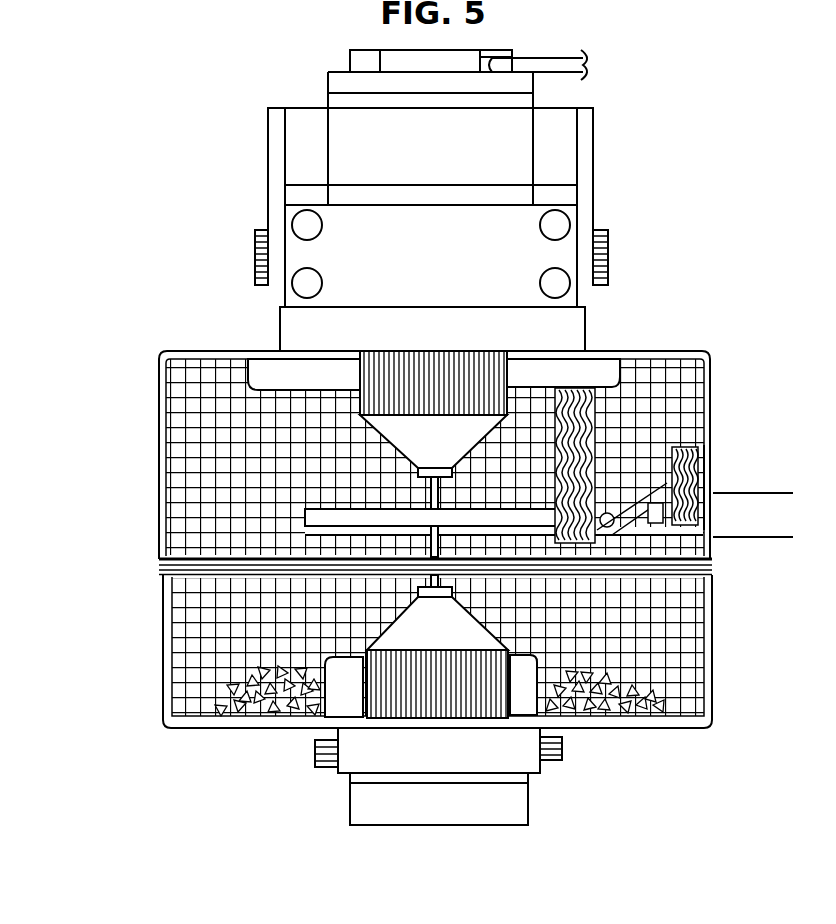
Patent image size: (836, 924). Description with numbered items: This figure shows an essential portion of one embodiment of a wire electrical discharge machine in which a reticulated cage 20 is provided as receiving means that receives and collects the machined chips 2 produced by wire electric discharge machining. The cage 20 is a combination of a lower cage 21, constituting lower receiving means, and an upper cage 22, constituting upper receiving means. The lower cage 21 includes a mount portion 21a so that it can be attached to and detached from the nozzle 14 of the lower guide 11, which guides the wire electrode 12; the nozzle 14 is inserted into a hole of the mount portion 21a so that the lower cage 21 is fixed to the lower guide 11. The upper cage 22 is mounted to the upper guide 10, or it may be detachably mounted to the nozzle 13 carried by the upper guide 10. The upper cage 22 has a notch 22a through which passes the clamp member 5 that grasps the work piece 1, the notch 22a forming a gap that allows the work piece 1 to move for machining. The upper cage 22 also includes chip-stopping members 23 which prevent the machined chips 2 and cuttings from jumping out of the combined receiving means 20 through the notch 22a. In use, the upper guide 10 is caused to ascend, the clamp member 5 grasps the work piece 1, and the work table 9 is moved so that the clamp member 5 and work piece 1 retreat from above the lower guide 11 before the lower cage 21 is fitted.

The work piece 1 is at (302, 508).
The machined chips 2 is at (667, 700).
The clamp member 5 is at (652, 568).
The work table 9 is at (747, 523).
The upper guide 10 is at (572, 182).
The lower guide 11 is at (512, 810).
The wire electrode 12 is at (438, 543).
The nozzle 13 is at (405, 375).
The nozzle 14 is at (445, 690).
The cage 20 is at (424, 558).
The lower cage 21 is at (715, 653).
The mount portion 21a is at (343, 692).
The upper cage 22 is at (424, 455).
The notch 22a is at (713, 475).
The chip-stopping members 23 is at (700, 450).